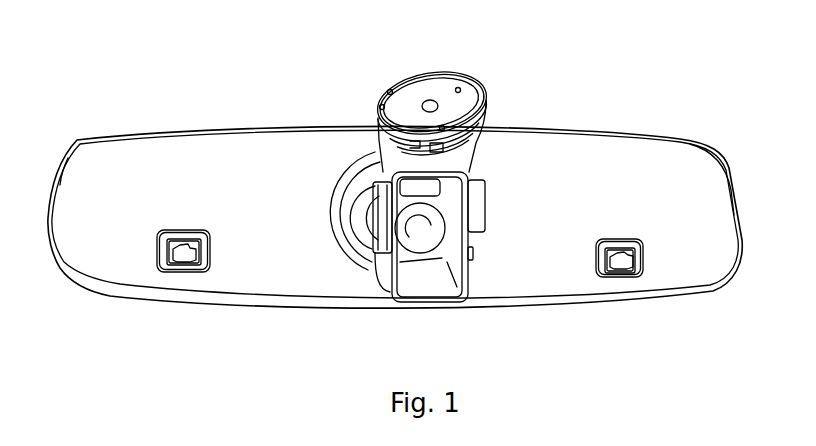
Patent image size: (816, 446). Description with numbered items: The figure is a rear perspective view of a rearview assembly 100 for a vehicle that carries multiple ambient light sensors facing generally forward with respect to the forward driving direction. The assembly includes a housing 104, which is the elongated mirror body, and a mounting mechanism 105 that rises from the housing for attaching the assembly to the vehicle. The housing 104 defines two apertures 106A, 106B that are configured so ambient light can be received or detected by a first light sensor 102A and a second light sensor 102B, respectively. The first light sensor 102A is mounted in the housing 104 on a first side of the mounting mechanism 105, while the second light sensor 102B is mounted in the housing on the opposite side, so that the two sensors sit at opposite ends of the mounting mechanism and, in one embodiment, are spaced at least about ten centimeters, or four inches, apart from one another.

The rearview assembly 100 is at (602, 95).
The housing 104 is at (500, 308).
The mounting mechanism 105 is at (374, 125).
The first light sensor 102A is at (182, 254).
The second light sensor 102B is at (617, 261).
The aperture 106A is at (190, 268).
The aperture 106B is at (633, 276).